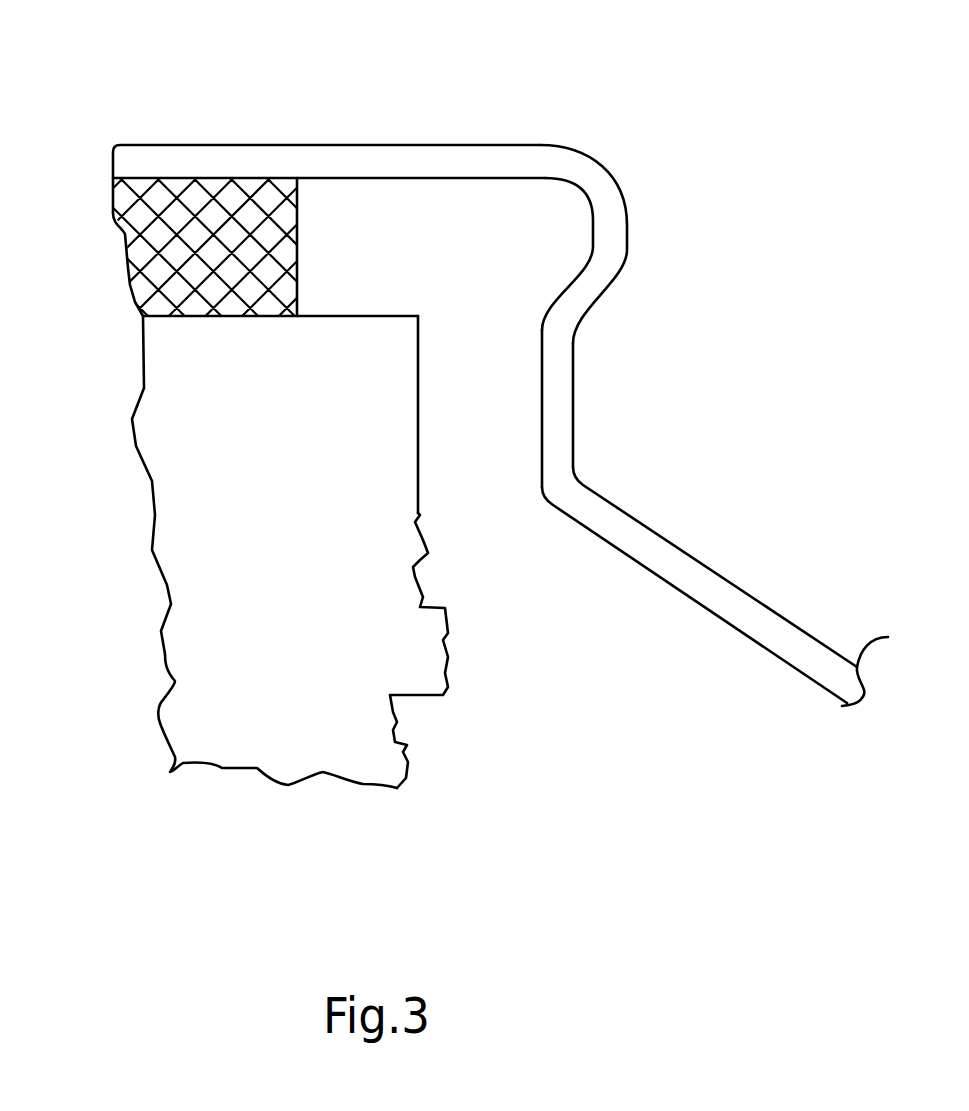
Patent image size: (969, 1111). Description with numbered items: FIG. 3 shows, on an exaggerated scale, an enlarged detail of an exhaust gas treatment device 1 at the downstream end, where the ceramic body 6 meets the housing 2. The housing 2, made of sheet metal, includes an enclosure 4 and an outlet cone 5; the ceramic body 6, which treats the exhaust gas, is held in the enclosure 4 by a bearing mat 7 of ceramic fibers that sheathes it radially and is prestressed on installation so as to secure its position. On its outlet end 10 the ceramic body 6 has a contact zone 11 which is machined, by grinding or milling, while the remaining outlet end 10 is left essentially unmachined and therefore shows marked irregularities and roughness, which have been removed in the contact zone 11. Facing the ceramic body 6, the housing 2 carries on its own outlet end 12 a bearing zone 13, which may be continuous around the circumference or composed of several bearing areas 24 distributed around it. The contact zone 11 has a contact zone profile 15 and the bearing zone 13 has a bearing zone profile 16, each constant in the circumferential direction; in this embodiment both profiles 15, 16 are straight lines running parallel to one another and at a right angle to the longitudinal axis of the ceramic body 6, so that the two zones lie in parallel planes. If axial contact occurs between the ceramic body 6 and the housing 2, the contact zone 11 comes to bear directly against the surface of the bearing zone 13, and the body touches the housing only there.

The exhaust gas treatment device 1 is at (740, 254).
The housing 2 is at (264, 135).
The enclosure 4 is at (197, 158).
The outlet cone 5 is at (708, 586).
The ceramic body 6 is at (226, 458).
The bearing mat 7 is at (218, 283).
The outlet end 10 is at (398, 722).
The contact zone 11 is at (428, 424).
The outlet end 12 is at (760, 645).
The bearing zone 13 is at (531, 438).
The contact zone profile 15 is at (418, 348).
The bearing zone profile 16 is at (542, 336).
The bearing areas 24 is at (542, 383).